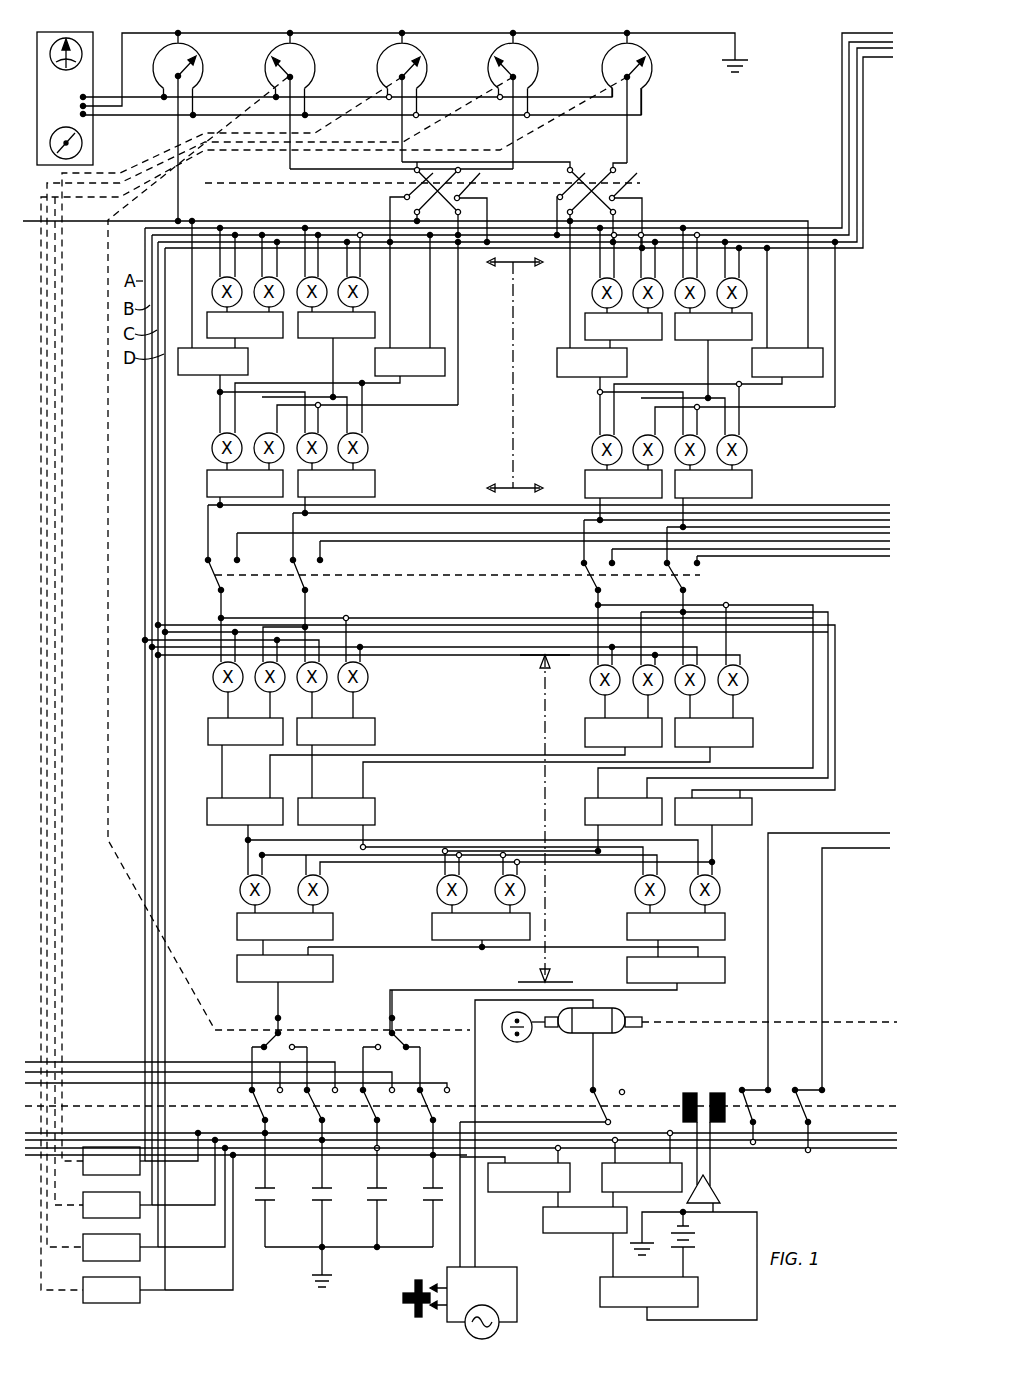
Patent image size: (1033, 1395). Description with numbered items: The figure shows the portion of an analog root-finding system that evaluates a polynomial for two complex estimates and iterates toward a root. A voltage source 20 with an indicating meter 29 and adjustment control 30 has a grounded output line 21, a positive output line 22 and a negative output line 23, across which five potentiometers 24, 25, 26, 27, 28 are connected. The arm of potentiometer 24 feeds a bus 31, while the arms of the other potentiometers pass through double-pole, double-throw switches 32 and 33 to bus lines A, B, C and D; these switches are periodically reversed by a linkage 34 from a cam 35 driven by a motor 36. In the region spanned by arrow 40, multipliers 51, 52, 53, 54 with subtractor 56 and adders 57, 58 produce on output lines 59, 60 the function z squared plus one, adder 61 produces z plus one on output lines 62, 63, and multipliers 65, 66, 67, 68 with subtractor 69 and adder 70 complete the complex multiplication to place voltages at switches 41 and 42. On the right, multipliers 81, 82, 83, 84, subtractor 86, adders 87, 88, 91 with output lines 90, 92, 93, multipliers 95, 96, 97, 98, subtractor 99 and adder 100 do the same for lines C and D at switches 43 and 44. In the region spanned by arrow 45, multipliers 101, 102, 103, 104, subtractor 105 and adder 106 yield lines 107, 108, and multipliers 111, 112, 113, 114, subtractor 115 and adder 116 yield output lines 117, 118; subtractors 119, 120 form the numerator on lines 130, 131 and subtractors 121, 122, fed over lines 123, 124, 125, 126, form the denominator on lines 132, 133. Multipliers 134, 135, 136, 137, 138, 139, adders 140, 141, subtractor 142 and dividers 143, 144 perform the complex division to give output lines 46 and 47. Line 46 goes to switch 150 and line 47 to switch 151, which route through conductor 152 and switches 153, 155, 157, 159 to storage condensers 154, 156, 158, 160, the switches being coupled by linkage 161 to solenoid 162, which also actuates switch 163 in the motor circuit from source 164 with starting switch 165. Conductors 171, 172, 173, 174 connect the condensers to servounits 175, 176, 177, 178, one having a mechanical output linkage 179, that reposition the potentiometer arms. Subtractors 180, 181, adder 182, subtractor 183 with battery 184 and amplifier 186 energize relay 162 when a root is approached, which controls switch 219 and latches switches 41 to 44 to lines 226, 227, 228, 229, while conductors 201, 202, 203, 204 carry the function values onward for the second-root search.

The voltage source 20 is at (93, 135).
The grounded output line 21 is at (717, 33).
The positive output line 22 is at (357, 96).
The negative output line 23 is at (386, 118).
The potentiometer 24 is at (200, 60).
The potentiometer 25 is at (313, 60).
The potentiometer 26 is at (425, 60).
The potentiometer 27 is at (536, 60).
The potentiometer 28 is at (650, 60).
The indicating meter 29 is at (55, 72).
The adjustment control 30 is at (89, 120).
The bus 31 is at (722, 221).
The double-pole, double-throw switch 32 is at (390, 201).
The double-pole, double-throw switch 33 is at (573, 201).
The linkage 34 is at (270, 185).
The cam 35 is at (514, 1050).
The motor 36 is at (580, 1036).
The arrow 40 is at (513, 369).
The switch 41 is at (202, 592).
The switch 42 is at (288, 592).
The switch 43 is at (580, 592).
The switch 44 is at (666, 592).
The arrow 45 is at (542, 800).
The output line 46 is at (276, 1002).
The output line 47 is at (391, 1007).
The multiplier 51 is at (216, 282).
The multiplier 52 is at (258, 282).
The multiplier 53 is at (301, 282).
The multiplier 54 is at (343, 282).
The subtractor 56 is at (245, 325).
The adder 57 is at (336, 325).
The adder 58 is at (213, 298).
The output line 59 is at (218, 389).
The output line 60 is at (333, 384).
The adder 61 is at (410, 362).
The output line 62 is at (402, 386).
The output line 63 is at (421, 406).
The multiplier 65 is at (216, 438).
The multiplier 66 is at (258, 438).
The multiplier 67 is at (301, 438).
The multiplier 68 is at (343, 438).
The subtractor 69 is at (245, 483).
The adder 70 is at (336, 483).
The multiplier 81 is at (596, 283).
The multiplier 82 is at (638, 283).
The multiplier 83 is at (680, 283).
The multiplier 84 is at (722, 283).
The subtractor 86 is at (623, 326).
The adder 87 is at (713, 326).
The adder 88 is at (592, 358).
The output line 90 is at (708, 384).
The adder 91 is at (787, 362).
The output line 92 is at (782, 386).
The output line 93 is at (797, 408).
The multiplier 95 is at (596, 440).
The multiplier 96 is at (638, 440).
The multiplier 97 is at (680, 440).
The multiplier 98 is at (722, 440).
The subtractor 99 is at (623, 484).
The adder 100 is at (713, 484).
The multiplier 101 is at (217, 696).
The multiplier 102 is at (262, 696).
The multiplier 103 is at (304, 696).
The multiplier 104 is at (347, 696).
The subtractor 105 is at (245, 731).
The adder 106 is at (336, 731).
The line 107 is at (222, 774).
The line 108 is at (312, 774).
The multiplier 111 is at (594, 698).
The multiplier 112 is at (640, 698).
The multiplier 113 is at (682, 698).
The multiplier 114 is at (725, 698).
The subtractor 115 is at (623, 732).
The adder 116 is at (714, 732).
The output line 117 is at (448, 755).
The output line 118 is at (448, 766).
The subtractor 119 is at (245, 811).
The subtractor 120 is at (336, 811).
The subtractor 121 is at (623, 811).
The subtractor 122 is at (713, 811).
The line 123 is at (735, 605).
The line 124 is at (785, 612).
The line 125 is at (448, 617).
The line 126 is at (493, 627).
The line 130 is at (248, 832).
The line 131 is at (366, 836).
The line 132 is at (596, 838).
The line 133 is at (715, 836).
The multiplier 134 is at (244, 882).
The multiplier 135 is at (306, 882).
The multiplier 136 is at (636, 894).
The multiplier 137 is at (692, 894).
The multiplier 138 is at (440, 897).
The multiplier 139 is at (500, 890).
The adder 140 is at (285, 926).
The adder 141 is at (503, 935).
The subtractor 142 is at (676, 935).
The divider 143 is at (285, 961).
The divider 144 is at (557, 995).
The switch 150 is at (281, 1045).
The switch 151 is at (395, 1031).
The conductor 152 is at (250, 1047).
The switch 153 is at (258, 1112).
The storage condenser 154 is at (274, 1196).
The switch 155 is at (316, 1112).
The storage condenser 156 is at (336, 1208).
The switch 157 is at (372, 1112).
The condenser 158 is at (387, 1196).
The switch 159 is at (428, 1112).
The storage condenser 160 is at (412, 1208).
The linkage 161 is at (538, 1108).
The solenoid 162 is at (716, 1092).
The switch 163 is at (604, 1100).
The source 164 is at (500, 1308).
The starting switch 165 is at (402, 1302).
The conductor 171 is at (187, 1155).
The conductor 172 is at (203, 1208).
The conductor 173 is at (206, 1253).
The conductor 174 is at (214, 1280).
The servounit 175 is at (114, 1161).
The servounit 176 is at (117, 1205).
The servounit 177 is at (120, 1247).
The servounit 178 is at (124, 1290).
The mechanical output linkage 179 is at (61, 1044).
The subtractor 180 is at (529, 1176).
The subtractor 181 is at (642, 1168).
The adder 182 is at (585, 1242).
The subtractor 183 is at (678, 1266).
The battery 184 is at (697, 1240).
The amplifier 186 is at (716, 1190).
The conductor 201 is at (442, 506).
The conductor 202 is at (471, 515).
The conductor 203 is at (822, 518).
The conductor 204 is at (880, 524).
The double-pole, single-throw switch 219 is at (755, 1114).
The output line 226 is at (374, 535).
The output line 227 is at (450, 535).
The line 228 is at (720, 552).
The line 229 is at (810, 556).